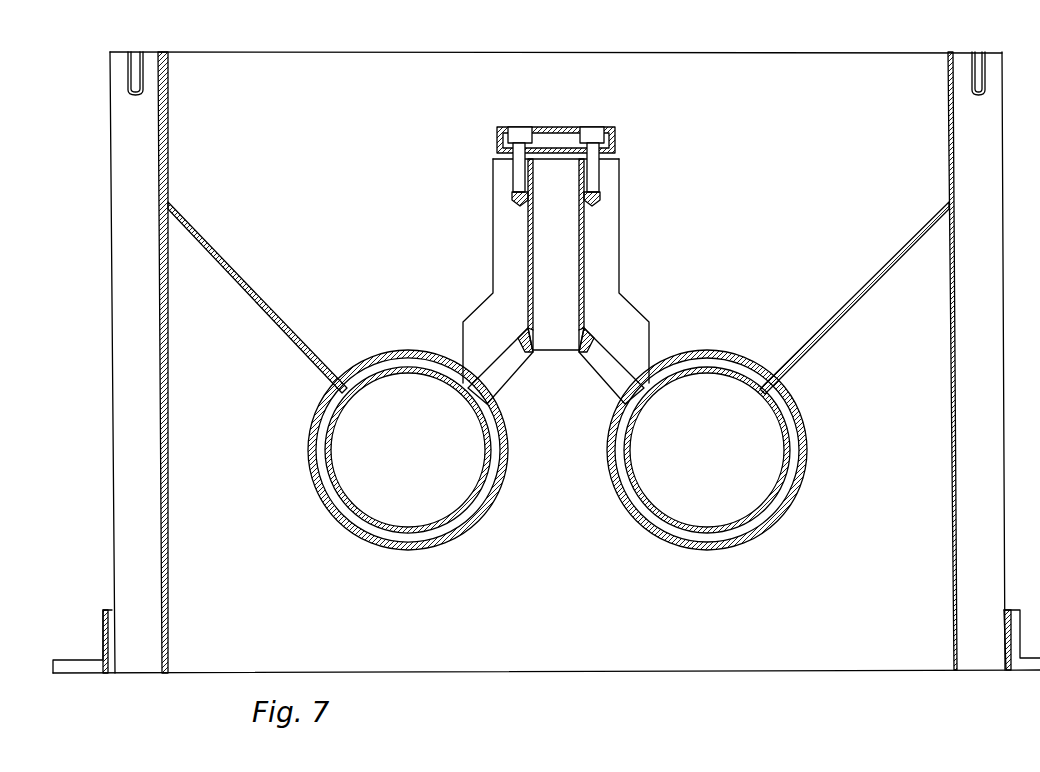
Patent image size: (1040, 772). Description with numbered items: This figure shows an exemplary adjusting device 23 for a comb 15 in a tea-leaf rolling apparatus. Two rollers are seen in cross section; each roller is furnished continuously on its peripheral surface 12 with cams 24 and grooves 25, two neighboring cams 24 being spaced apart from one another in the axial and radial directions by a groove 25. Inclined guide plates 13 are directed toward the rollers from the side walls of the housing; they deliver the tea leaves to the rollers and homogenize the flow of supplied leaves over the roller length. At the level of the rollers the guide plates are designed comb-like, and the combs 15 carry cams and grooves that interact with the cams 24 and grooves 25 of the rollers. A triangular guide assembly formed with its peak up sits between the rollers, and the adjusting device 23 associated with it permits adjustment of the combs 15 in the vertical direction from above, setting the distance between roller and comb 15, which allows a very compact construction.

The peripheral surface 12 is at (557, 448).
The guide plate 13 is at (840, 314).
The comb 15 is at (512, 373).
The adjusting device 23 is at (630, 170).
The cam 24 is at (388, 362).
The groove 25 is at (648, 553).